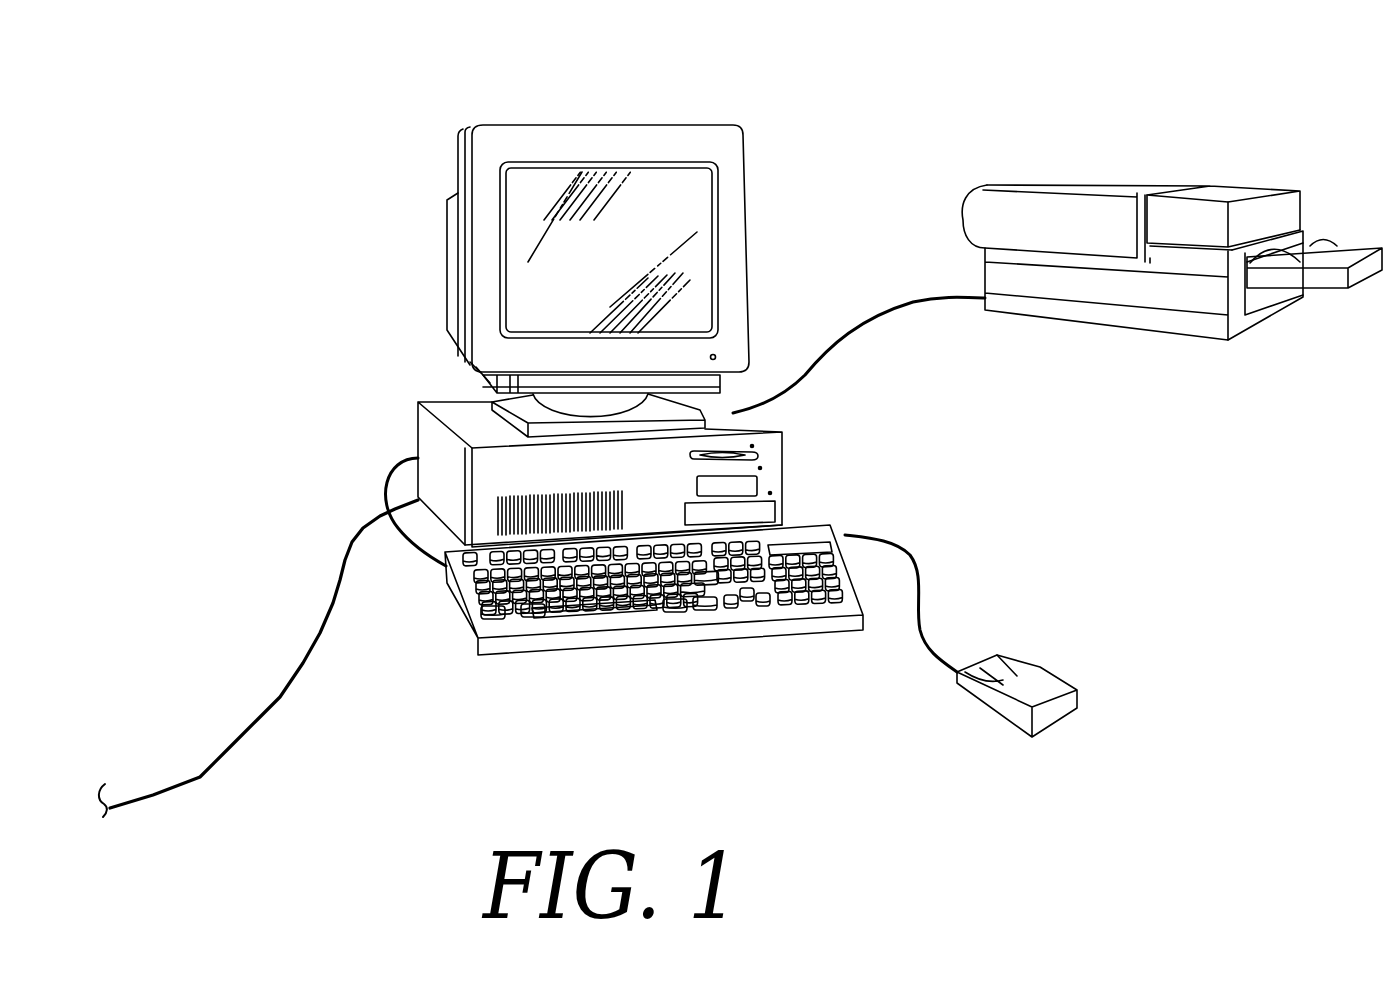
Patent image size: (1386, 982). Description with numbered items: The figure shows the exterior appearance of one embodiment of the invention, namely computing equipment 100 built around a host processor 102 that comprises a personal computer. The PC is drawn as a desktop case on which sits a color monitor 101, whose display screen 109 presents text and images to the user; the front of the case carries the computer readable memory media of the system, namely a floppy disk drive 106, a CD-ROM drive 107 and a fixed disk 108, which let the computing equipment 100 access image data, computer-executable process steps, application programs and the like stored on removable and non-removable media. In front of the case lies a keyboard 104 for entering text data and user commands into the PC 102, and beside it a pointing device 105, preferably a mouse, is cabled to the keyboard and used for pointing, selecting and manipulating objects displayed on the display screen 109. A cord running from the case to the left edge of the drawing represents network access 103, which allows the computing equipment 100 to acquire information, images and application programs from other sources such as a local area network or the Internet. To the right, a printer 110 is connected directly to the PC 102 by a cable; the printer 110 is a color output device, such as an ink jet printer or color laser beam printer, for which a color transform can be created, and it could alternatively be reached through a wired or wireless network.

The computing equipment 100 is at (723, 82).
The color monitor 101 is at (607, 125).
The host processor 102 is at (442, 400).
The network access 103 is at (147, 797).
The keyboard 104 is at (575, 628).
The pointing device 105 is at (1053, 720).
The floppy disk drive 106 is at (755, 457).
The CD-ROM drive 107 is at (707, 485).
The fixed disk 108 is at (767, 508).
The display screen 109 is at (697, 213).
The printer 110 is at (1046, 170).